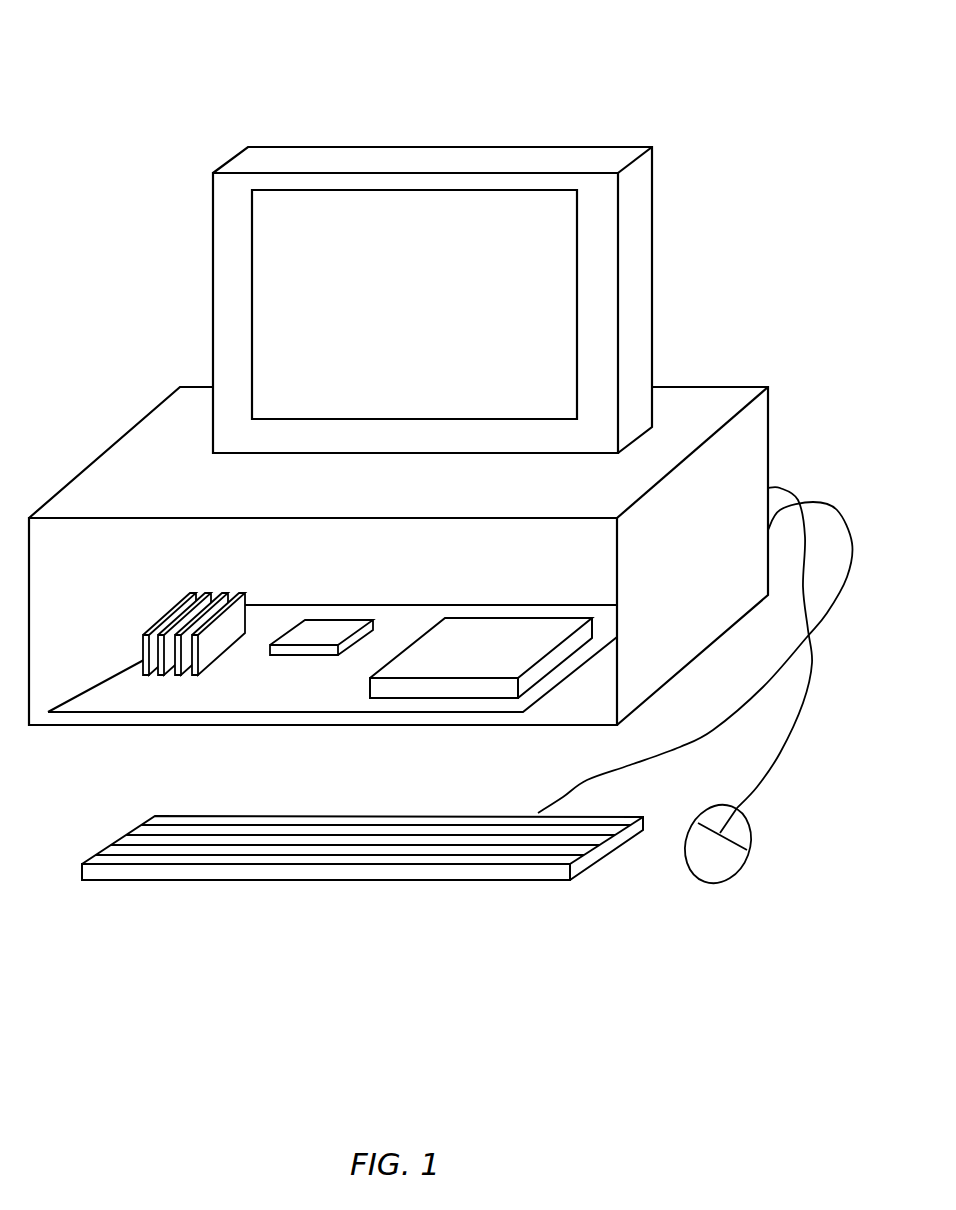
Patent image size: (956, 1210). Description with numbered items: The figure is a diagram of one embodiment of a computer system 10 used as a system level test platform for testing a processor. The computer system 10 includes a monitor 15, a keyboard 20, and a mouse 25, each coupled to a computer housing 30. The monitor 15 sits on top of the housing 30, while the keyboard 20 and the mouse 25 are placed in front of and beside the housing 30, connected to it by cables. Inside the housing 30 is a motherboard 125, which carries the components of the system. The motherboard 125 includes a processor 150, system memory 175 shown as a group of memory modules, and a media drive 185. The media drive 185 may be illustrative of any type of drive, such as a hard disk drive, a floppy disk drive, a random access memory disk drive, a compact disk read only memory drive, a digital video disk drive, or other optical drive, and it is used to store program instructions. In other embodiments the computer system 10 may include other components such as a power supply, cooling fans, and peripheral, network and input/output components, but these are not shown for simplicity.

The computer system 10 is at (316, 73).
The monitor 15 is at (427, 316).
The computer housing 30 is at (162, 486).
The motherboard 125 is at (227, 700).
The system memory 175 is at (243, 587).
The processor 150 is at (312, 637).
The media drive 185 is at (506, 660).
The keyboard 20 is at (346, 881).
The mouse 25 is at (726, 861).